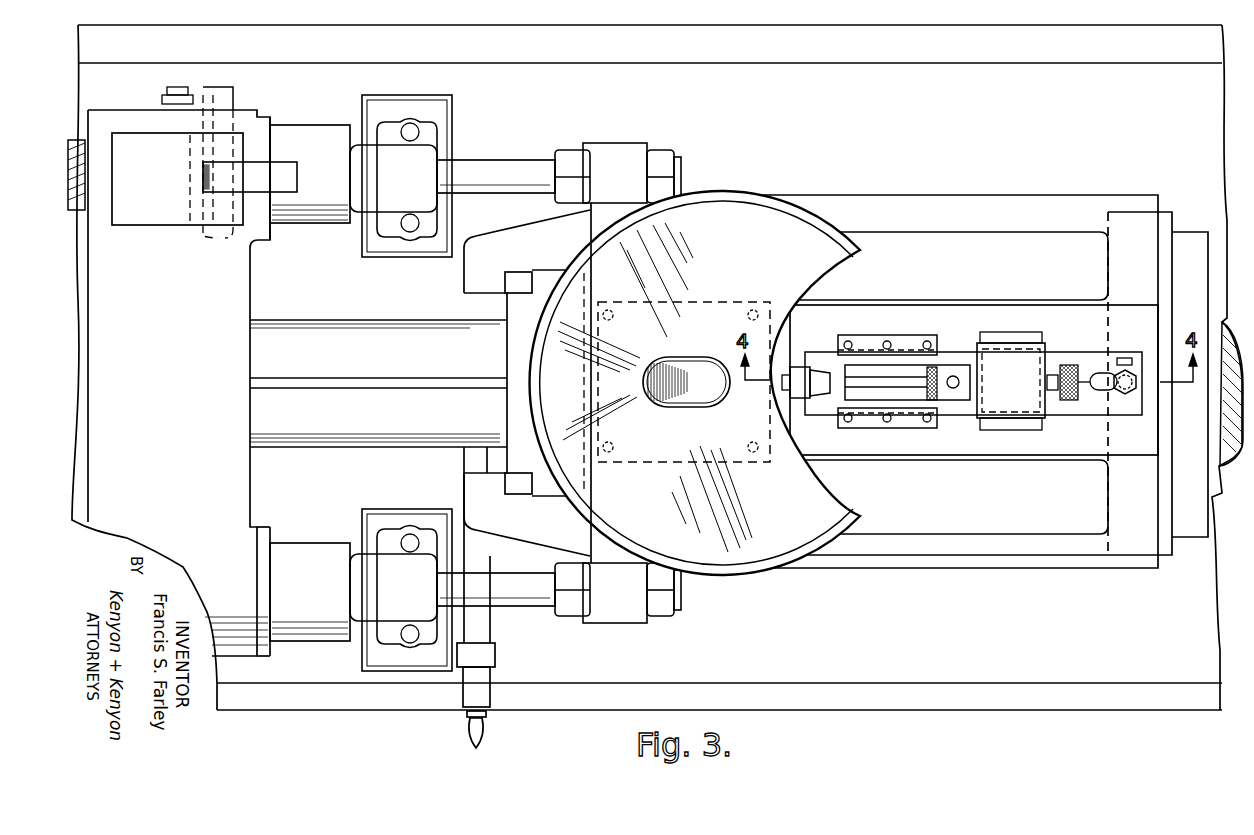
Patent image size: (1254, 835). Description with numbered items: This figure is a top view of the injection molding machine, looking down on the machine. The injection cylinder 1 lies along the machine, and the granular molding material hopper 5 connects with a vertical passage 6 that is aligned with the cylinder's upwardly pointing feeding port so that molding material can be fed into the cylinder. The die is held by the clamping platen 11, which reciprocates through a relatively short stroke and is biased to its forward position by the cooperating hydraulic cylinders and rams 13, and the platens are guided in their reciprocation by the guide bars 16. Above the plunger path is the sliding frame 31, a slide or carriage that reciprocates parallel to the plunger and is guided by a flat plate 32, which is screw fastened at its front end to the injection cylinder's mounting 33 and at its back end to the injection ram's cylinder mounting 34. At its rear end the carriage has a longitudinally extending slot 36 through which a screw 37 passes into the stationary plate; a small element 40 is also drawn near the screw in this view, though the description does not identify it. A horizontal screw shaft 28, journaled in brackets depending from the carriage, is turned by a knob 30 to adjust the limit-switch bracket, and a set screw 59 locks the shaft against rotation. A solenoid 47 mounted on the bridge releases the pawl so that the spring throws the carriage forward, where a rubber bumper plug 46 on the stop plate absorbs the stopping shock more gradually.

The injection cylinder 1 is at (373, 319).
The granular molding material hopper 5 is at (735, 195).
The vertical passage 6 is at (678, 359).
The clamping platen 11 is at (245, 299).
The hydraulic cylinders and rams 13 is at (308, 125).
The guide bars 16 is at (77, 140).
The screw shaft 28 is at (897, 377).
The knob 30 is at (939, 400).
The sliding frame 31 is at (823, 405).
The flat plate 32 is at (1116, 457).
The injection cylinder's mounting 33 is at (780, 421).
The injection ram's cylinder mounting 34 is at (1160, 224).
The slot 36 is at (1105, 380).
The screw 37 is at (1125, 395).
The stop 40 is at (1125, 358).
The rubber bumper plug 46 is at (812, 369).
The solenoid 47 is at (1045, 413).
The set screw 59 is at (953, 376).